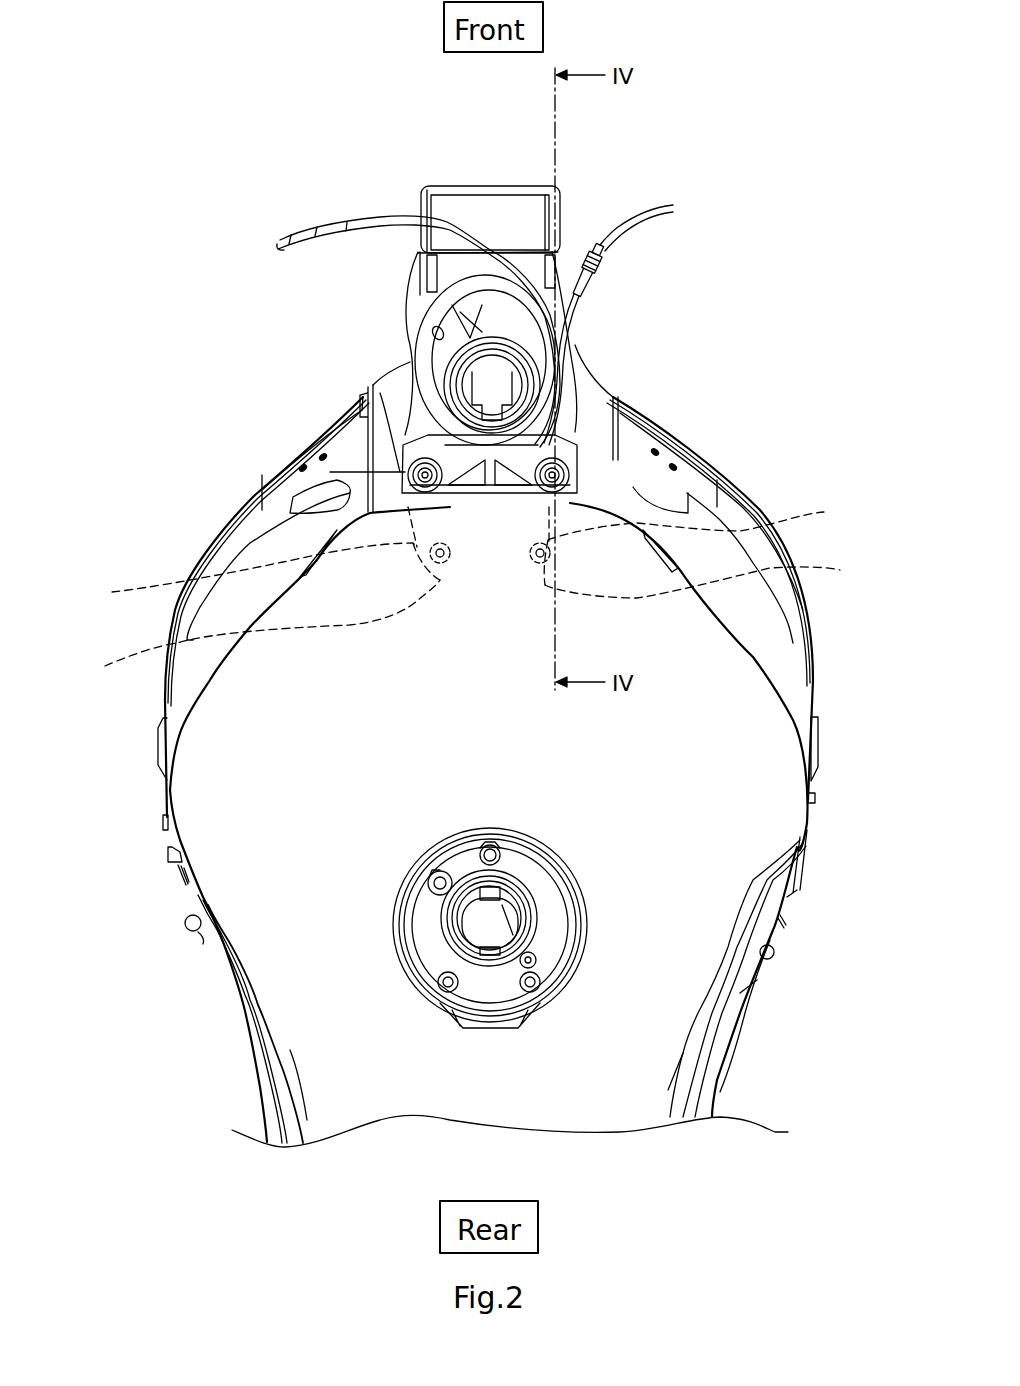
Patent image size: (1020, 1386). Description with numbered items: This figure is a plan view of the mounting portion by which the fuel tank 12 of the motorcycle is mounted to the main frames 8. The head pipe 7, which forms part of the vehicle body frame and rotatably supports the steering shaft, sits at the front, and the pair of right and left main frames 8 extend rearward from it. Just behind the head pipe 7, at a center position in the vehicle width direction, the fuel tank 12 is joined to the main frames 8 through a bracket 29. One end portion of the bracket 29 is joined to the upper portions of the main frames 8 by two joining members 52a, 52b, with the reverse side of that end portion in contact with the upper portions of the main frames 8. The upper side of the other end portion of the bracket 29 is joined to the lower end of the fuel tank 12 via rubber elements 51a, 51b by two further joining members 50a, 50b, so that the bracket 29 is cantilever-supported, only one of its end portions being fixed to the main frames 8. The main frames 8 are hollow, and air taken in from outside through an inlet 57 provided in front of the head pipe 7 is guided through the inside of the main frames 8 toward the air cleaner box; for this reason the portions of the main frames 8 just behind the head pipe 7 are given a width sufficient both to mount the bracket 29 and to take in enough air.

The head pipe 7 is at (553, 350).
The main frames 8 is at (345, 447).
The fuel tank 12 is at (245, 912).
The bracket 29 is at (562, 440).
The joining member 50a is at (698, 544).
The joining member 50b is at (256, 556).
The rubber element 51a is at (714, 579).
The rubber element 51b is at (249, 631).
The joining member 52a is at (650, 468).
The joining member 52b is at (263, 500).
The inlet 57 is at (487, 183).